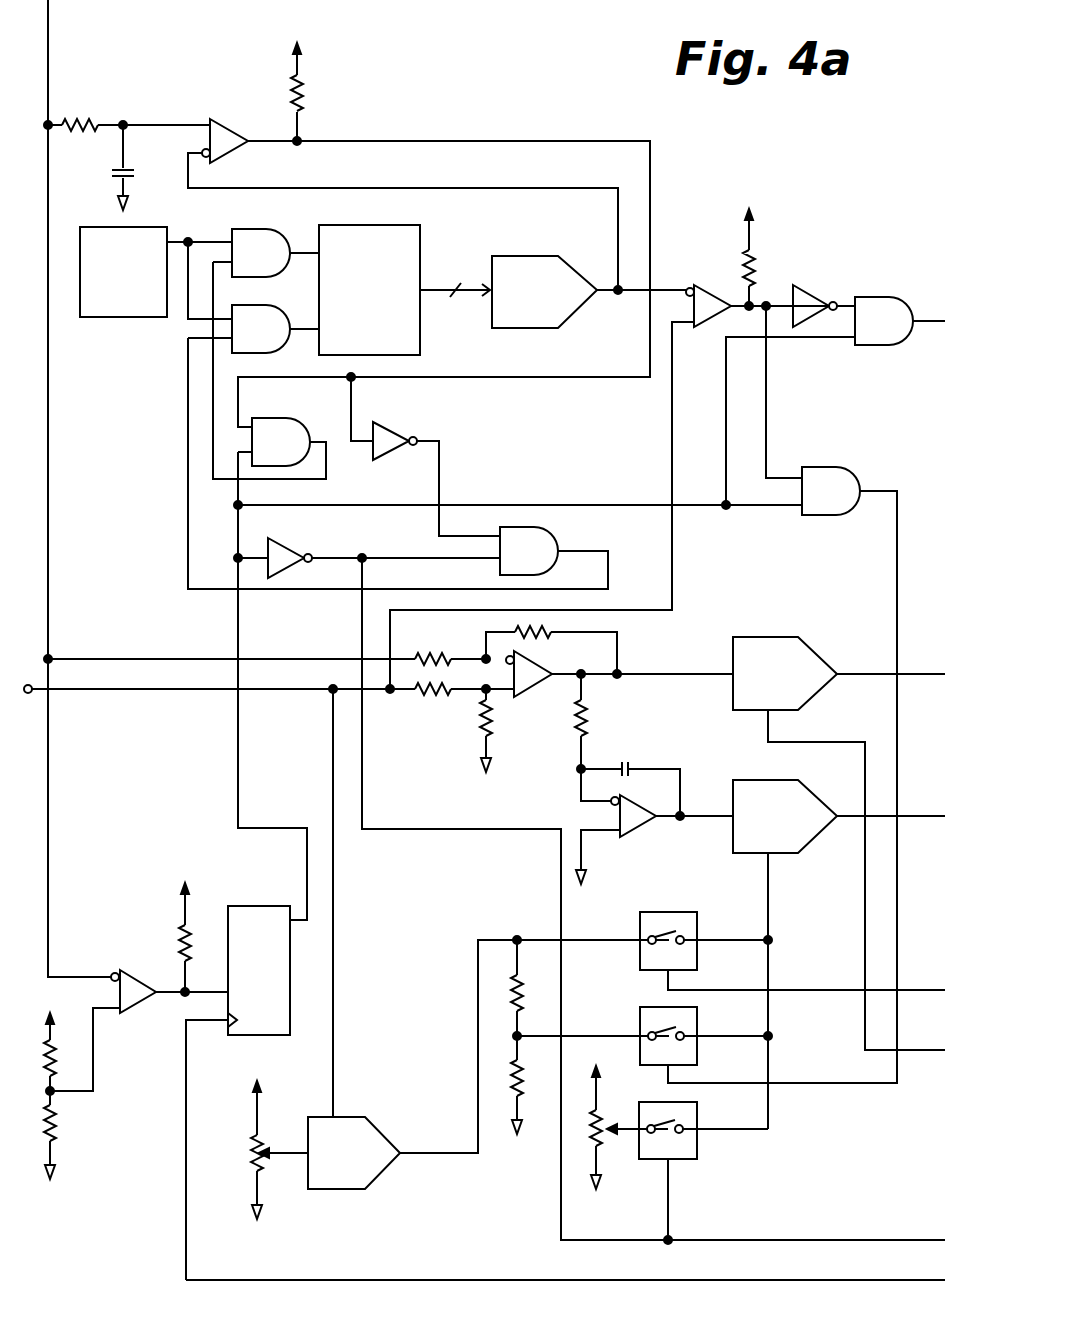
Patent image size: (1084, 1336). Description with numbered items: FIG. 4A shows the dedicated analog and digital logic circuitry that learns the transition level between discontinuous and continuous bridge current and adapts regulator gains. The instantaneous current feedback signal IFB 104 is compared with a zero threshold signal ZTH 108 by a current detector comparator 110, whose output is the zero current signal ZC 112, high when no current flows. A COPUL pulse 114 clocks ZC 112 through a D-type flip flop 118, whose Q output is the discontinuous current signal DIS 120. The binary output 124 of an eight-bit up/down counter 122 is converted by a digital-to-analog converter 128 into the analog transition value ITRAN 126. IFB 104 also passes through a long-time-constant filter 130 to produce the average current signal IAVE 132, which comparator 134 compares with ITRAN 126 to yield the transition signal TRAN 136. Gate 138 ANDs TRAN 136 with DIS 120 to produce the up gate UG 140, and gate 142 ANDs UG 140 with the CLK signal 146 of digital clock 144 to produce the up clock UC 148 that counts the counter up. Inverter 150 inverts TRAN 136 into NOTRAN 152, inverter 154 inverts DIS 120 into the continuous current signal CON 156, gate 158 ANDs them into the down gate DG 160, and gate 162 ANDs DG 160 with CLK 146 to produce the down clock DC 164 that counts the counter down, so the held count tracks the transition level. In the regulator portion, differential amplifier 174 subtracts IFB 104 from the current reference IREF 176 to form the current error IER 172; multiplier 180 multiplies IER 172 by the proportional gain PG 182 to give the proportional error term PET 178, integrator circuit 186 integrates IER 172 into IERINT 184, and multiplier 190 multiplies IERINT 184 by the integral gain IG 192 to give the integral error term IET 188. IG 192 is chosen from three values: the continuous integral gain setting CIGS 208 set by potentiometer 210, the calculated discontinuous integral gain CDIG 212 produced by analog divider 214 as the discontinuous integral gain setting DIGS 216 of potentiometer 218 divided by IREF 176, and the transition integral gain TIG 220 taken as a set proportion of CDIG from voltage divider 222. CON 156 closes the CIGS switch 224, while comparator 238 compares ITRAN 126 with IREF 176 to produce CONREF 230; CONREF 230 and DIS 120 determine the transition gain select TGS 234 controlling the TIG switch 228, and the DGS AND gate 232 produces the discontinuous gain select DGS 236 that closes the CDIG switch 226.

The instantaneous current feedback signal IFB 104 is at (932, 0).
The zero threshold signal ZTH 108 is at (94, 1076).
The current detector comparator 110 is at (136, 976).
The zero current logic signal ZC 112 is at (194, 998).
The combined pulses logic signal COPUL 114 is at (186, 1218).
The D-type flip flop 118 is at (240, 906).
The discontinuous current logic signal DIS 120 is at (238, 762).
The eight-bit up/down counter 122 is at (384, 225).
The binary output 124 is at (464, 264).
The analog transition value ITRAN 126 is at (662, 290).
The digital-to-analog converter 128 is at (574, 308).
The filter 130 is at (160, 158).
The average current signal IAVE 132 is at (180, 125).
The comparator 134 is at (224, 120).
The transition logic signal TRAN 136 is at (410, 140).
The AND gate 138 is at (264, 418).
The up gate logic signal UG 140 is at (318, 442).
The AND gate 142 is at (248, 228).
The digital clock 144 is at (110, 227).
The clock signal CLK 146 is at (182, 238).
The up clock logic signal UC 148 is at (296, 252).
The inverter 150 is at (388, 460).
The not transition signal NOTRAN 152 is at (426, 440).
The inverter 154 is at (290, 558).
The continuous current signal CON 156 is at (336, 558).
The AND gate 158 is at (554, 530).
The down gate logic signal DG 160 is at (614, 562).
The AND gate 162 is at (246, 306).
The down clock signal DC 164 is at (305, 340).
The current error analog signal IER 172 is at (648, 674).
The differential amplifier 174 is at (536, 685).
The current reference analog signal IREF 176 is at (150, 689).
The proportional error term signal PET 178 is at (854, 674).
The analog multiplier 180 is at (764, 637).
The proportional gain signal PG 182 is at (820, 742).
The current error integral signal IERINT 184 is at (698, 816).
The op amp integrator circuit 186 is at (640, 832).
The integral error term signal IET 188 is at (916, 816).
The analog multiplier 190 is at (765, 780).
The integral gain signal IG 192 is at (768, 878).
The continuous integral gain setting CIGS 208 is at (620, 1128).
The potentiometer 210 is at (606, 1146).
The calculated discontinuous integral gain CDIG 212 is at (476, 1028).
The analog divider 214 is at (382, 1130).
The discontinuous integral gain setting DIGS 216 is at (292, 1144).
The potentiometer 218 is at (250, 1156).
The transition integral gain TIG 220 is at (590, 1036).
The voltage divider 222 is at (518, 936).
The CIGS switch 224 is at (698, 1142).
The CDIG switch 226 is at (714, 928).
The TIG switch 228 is at (714, 1032).
The continuous reference logic signal CONREF 230 is at (754, 298).
The DGS AND gate 232 is at (886, 346).
The transition gain select signal TGS 234 is at (882, 490).
The discontinuous gain select signal DGS 236 is at (929, 320).
The comparator 238 is at (702, 324).